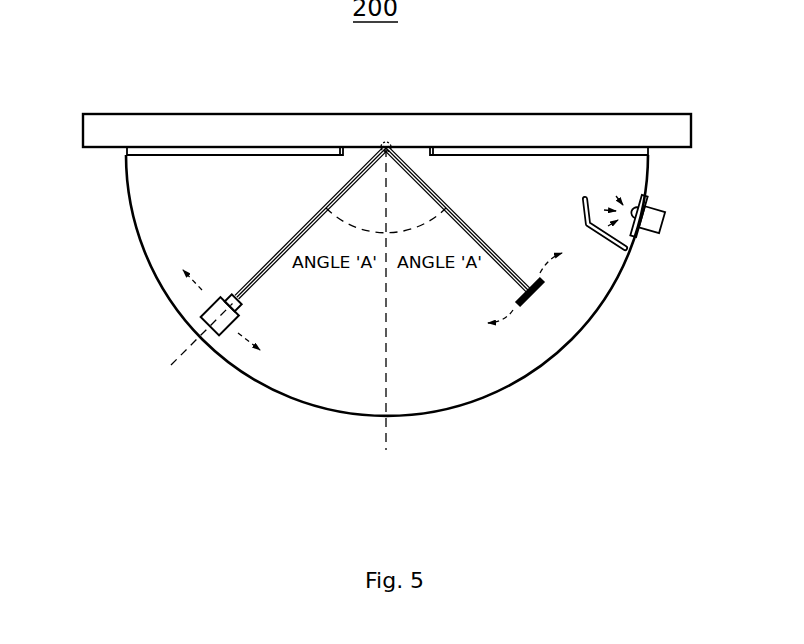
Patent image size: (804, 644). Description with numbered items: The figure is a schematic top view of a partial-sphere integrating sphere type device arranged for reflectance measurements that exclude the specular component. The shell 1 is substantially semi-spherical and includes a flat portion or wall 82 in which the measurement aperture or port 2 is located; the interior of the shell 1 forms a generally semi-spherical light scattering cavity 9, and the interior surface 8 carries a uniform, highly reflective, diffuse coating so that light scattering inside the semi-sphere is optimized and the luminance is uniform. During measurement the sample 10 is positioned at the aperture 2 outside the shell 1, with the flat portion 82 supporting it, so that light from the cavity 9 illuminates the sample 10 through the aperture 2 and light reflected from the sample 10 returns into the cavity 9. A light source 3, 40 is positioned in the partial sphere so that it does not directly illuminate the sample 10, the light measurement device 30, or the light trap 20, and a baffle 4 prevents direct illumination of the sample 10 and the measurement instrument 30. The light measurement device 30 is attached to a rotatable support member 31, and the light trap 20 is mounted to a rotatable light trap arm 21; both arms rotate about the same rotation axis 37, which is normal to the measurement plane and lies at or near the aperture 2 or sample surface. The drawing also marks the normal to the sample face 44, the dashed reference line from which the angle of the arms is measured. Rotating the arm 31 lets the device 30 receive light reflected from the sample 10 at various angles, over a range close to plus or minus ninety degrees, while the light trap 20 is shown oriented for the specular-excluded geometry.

The sample 10 is at (461, 112).
The aperture 2 is at (357, 140).
The flat portion 82 is at (285, 157).
The rotation axis 37 is at (388, 141).
The shell 1 is at (250, 378).
The internal light scattering surface 8 is at (500, 378).
The light scattering cavity 9 is at (332, 322).
The normal axis to sample face 44 is at (386, 370).
The support member 31 is at (272, 245).
The light measurement device 30 is at (222, 280).
The light trap arm 21 is at (478, 221).
The light trap 20 is at (540, 300).
The light source 3 is at (655, 202).
The light source 40 is at (660, 242).
The baffle 4 is at (632, 258).